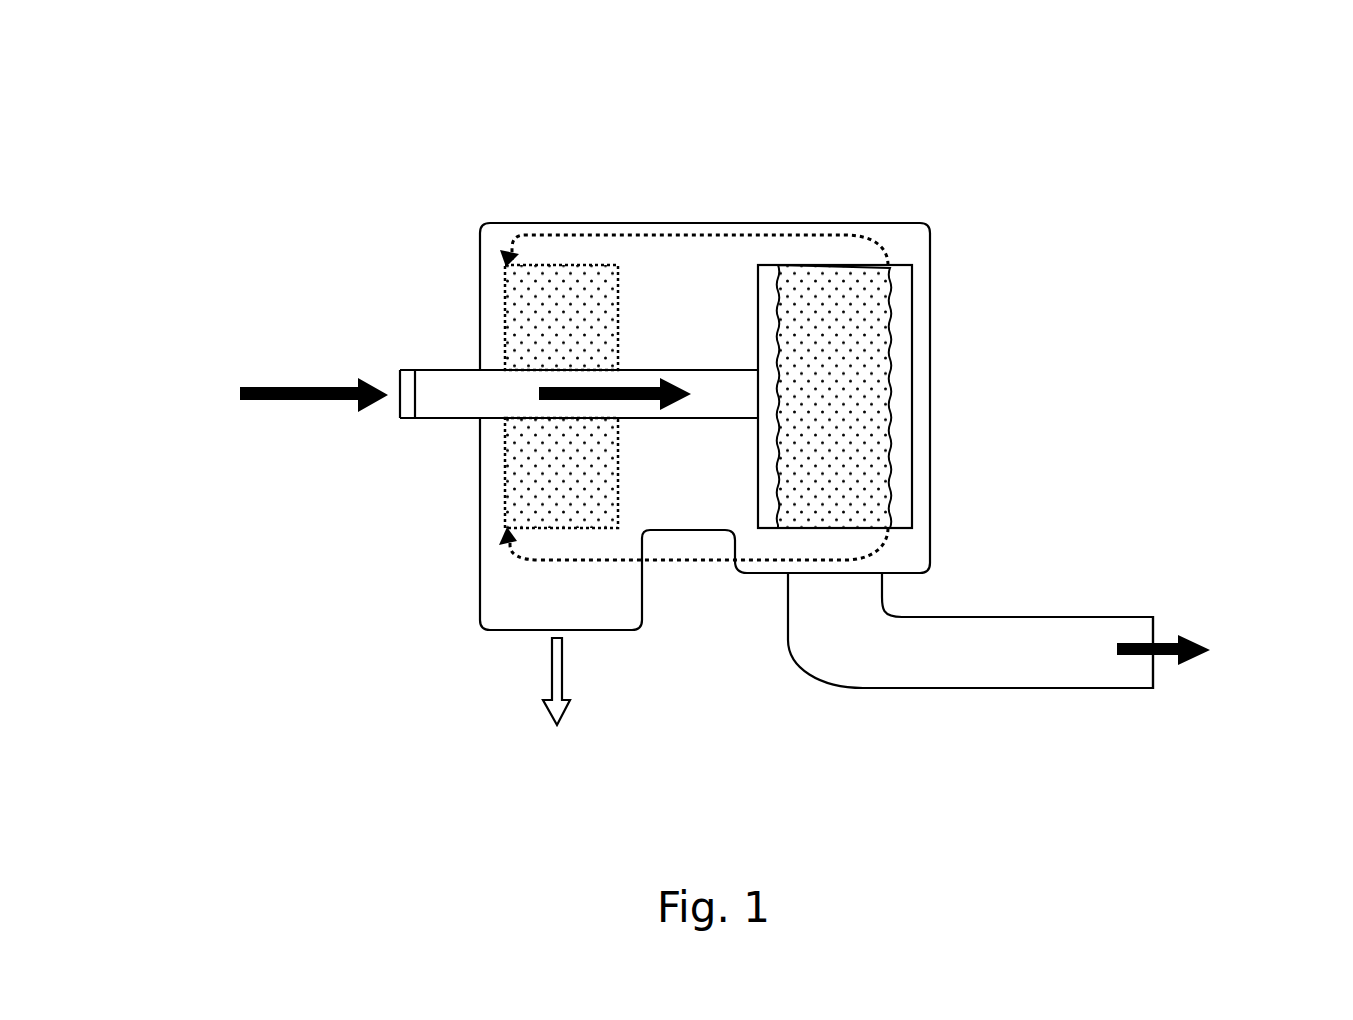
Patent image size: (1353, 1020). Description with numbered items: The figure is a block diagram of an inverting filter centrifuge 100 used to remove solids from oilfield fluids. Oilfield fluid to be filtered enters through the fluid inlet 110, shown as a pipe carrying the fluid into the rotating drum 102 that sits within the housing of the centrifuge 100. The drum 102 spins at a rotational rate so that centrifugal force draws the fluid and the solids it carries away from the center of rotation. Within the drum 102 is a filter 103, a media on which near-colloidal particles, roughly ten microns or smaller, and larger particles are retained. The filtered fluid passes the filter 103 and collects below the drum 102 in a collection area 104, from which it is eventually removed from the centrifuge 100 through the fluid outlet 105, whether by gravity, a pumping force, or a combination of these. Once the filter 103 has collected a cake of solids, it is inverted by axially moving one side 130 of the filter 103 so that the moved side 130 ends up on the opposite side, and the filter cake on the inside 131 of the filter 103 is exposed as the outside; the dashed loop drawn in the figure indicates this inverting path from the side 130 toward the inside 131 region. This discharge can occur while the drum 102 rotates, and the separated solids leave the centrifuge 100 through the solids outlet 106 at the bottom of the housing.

The centrifuge 100 is at (930, 58).
The rotating drum 102 is at (910, 386).
The filter 103 is at (873, 328).
The collection area 104 is at (911, 553).
The fluid outlet 105 is at (1060, 617).
The solids outlet 106 is at (481, 590).
The oilfield fluid to be filtered inlet 110 is at (448, 370).
The side of the filter 130 is at (506, 268).
The inside of the filter 131 is at (521, 322).